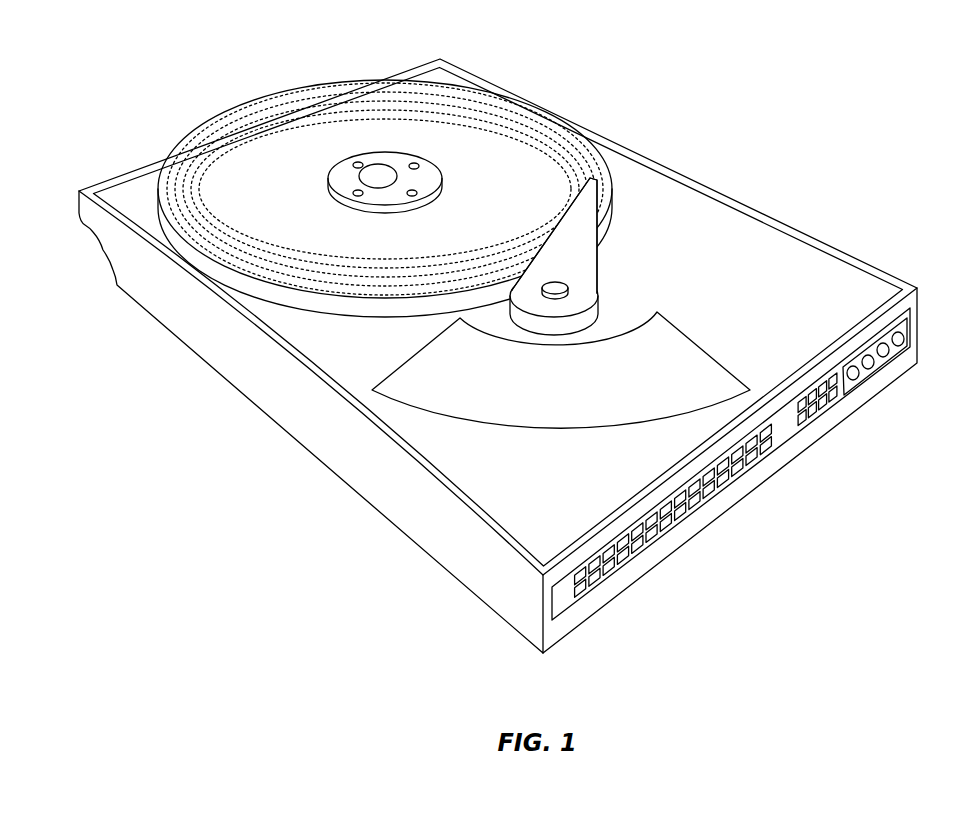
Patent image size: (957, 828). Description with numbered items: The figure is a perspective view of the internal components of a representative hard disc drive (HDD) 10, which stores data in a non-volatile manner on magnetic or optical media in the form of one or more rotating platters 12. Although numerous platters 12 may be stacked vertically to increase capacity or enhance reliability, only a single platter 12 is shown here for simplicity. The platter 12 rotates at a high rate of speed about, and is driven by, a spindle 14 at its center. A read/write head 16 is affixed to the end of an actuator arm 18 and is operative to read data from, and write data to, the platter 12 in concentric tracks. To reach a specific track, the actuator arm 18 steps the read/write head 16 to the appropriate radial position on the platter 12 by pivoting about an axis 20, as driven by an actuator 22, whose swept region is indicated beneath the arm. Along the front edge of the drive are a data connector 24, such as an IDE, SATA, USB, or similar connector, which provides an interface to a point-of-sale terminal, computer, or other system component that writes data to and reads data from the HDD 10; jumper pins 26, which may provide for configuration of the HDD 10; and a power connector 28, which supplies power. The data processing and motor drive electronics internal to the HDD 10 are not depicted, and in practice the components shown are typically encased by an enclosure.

The hard disc drive 10 is at (805, 90).
The platter 12 is at (227, 175).
The spindle 14 is at (382, 170).
The read/write head 16 is at (590, 178).
The actuator arm 18 is at (575, 240).
The axis 20 is at (563, 280).
The actuator 22 is at (512, 385).
The data connector 24 is at (672, 522).
The jumper pins 26 is at (822, 412).
The power connector 28 is at (880, 360).